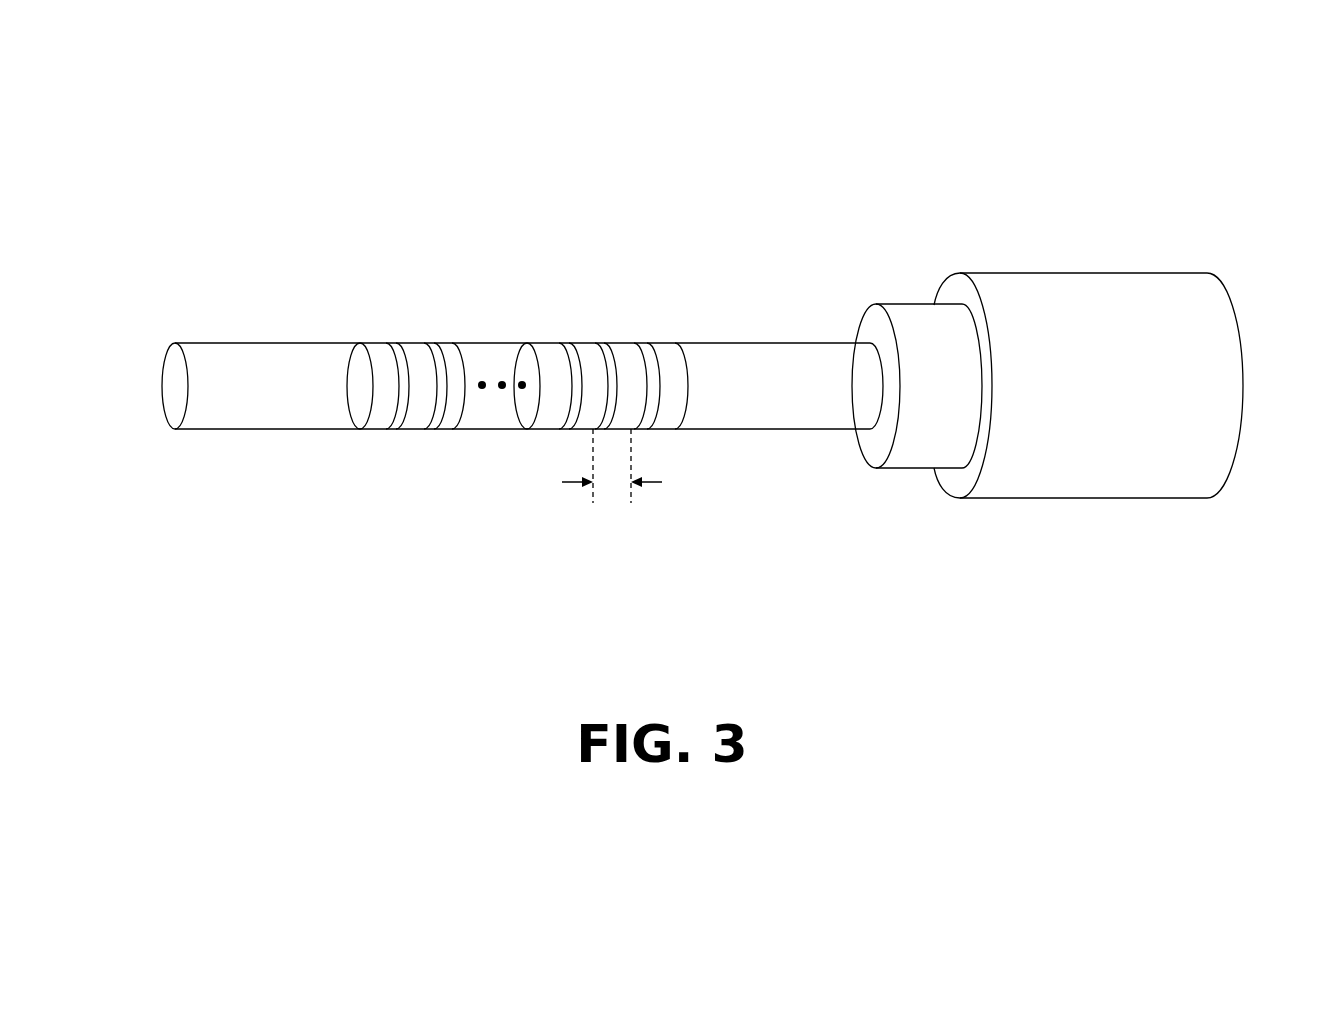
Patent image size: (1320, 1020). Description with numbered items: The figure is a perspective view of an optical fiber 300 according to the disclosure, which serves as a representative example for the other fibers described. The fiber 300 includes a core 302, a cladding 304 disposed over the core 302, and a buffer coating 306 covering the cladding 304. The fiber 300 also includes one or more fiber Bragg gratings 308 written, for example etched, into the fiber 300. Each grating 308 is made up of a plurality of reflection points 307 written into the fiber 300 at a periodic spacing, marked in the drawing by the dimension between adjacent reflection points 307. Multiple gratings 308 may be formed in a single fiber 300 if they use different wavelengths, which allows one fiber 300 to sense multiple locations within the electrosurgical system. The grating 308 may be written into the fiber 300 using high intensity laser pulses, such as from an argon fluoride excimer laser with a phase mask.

The fiber 300 is at (434, 137).
The core 302 is at (250, 350).
The cladding 304 is at (915, 315).
The buffer coating 306 is at (1097, 285).
The reflection points 307 is at (622, 350).
The fiber Bragg gratings 308 is at (358, 285).